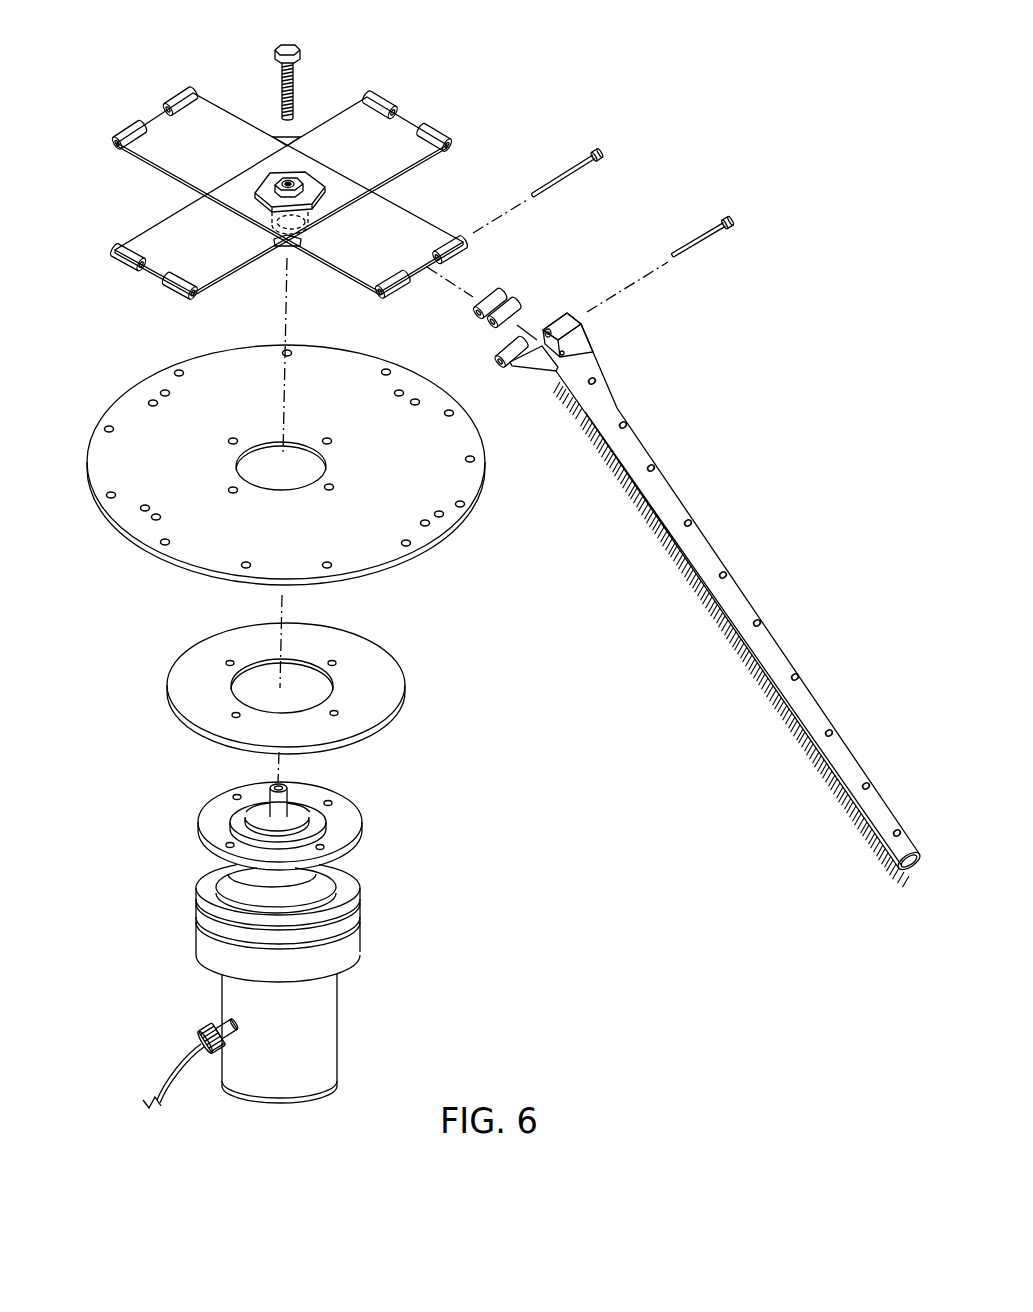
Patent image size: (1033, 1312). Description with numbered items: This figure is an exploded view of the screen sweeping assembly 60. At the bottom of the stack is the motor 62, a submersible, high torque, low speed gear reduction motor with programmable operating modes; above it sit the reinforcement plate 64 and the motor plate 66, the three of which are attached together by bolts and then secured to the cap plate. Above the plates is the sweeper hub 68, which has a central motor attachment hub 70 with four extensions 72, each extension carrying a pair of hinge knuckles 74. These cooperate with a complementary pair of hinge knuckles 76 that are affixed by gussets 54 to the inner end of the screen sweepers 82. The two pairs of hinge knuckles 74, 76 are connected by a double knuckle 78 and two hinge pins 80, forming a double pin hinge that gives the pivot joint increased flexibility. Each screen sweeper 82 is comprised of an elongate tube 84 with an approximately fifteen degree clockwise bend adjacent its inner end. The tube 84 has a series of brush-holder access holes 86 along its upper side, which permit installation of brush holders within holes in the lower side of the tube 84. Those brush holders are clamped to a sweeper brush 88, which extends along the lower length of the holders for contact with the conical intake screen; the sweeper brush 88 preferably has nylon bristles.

The gussets 54 is at (578, 338).
The screen sweeping assembly 60 is at (605, 841).
The motor 62 is at (362, 918).
The reinforcement plate 64 is at (397, 659).
The motor plate 66 is at (462, 530).
The sweeper hub 68 is at (317, 171).
The central motor attachment hub 70 is at (280, 184).
The extensions 72 is at (227, 112).
The hinge knuckles 74 is at (127, 133).
The hinge knuckles 76 is at (558, 320).
The double knuckle 78 is at (470, 310).
The hinge pins 80 is at (607, 148).
The screen sweepers 82 is at (707, 562).
The elongate tube 84 is at (777, 640).
The brush-holder access holes 86 is at (653, 465).
The sweeper brush 88 is at (779, 710).